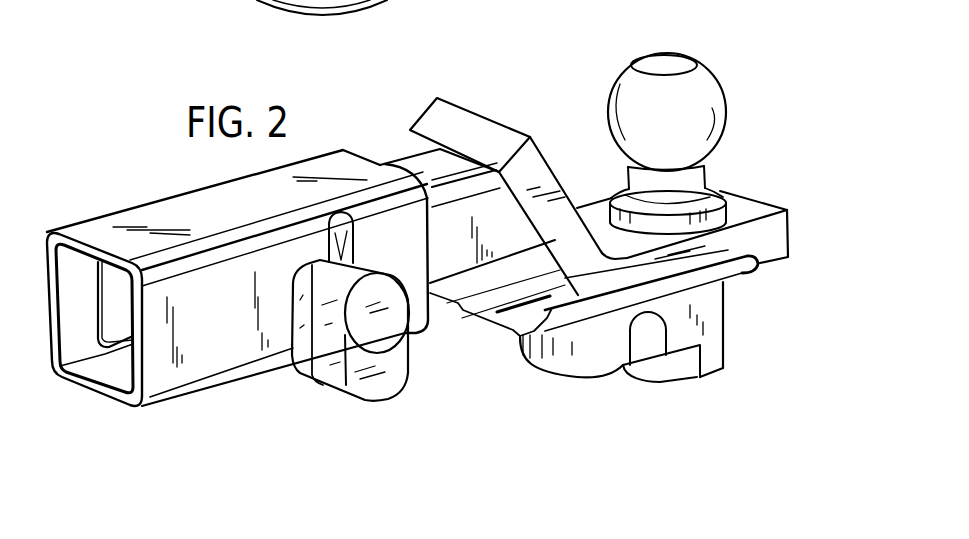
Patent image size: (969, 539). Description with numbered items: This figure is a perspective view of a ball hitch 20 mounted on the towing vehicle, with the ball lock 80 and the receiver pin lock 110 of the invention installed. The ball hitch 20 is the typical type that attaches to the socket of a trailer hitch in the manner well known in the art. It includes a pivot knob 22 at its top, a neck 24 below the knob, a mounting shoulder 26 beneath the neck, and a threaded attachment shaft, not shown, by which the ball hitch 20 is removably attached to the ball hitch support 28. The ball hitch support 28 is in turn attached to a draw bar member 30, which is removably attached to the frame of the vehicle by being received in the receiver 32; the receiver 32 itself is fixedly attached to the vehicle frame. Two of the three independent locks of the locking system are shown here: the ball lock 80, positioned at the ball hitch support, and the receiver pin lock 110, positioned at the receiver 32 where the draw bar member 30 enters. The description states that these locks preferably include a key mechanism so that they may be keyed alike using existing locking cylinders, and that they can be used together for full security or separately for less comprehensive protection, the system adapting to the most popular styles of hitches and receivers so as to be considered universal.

The ball hitch 20 is at (746, 82).
The pivot knob 22 is at (701, 75).
The neck 24 is at (703, 165).
The mounting shoulder 26 is at (730, 194).
The ball hitch support 28 is at (731, 252).
The draw bar member 30 is at (467, 267).
The receiver 32 is at (186, 189).
The ball lock 80 is at (717, 375).
The receiver pin lock 110 is at (392, 393).